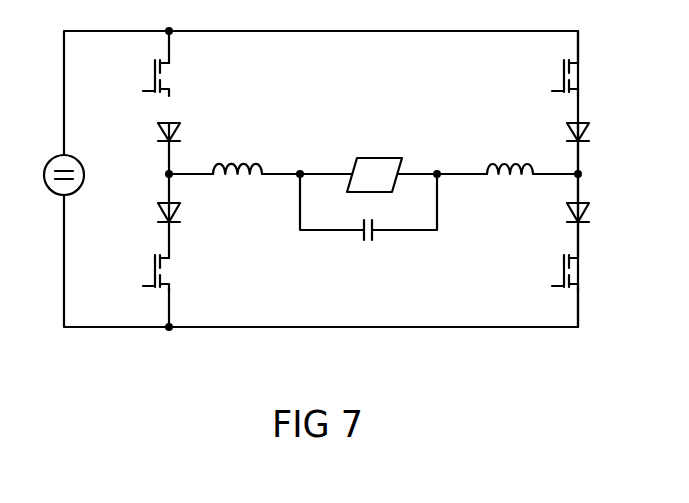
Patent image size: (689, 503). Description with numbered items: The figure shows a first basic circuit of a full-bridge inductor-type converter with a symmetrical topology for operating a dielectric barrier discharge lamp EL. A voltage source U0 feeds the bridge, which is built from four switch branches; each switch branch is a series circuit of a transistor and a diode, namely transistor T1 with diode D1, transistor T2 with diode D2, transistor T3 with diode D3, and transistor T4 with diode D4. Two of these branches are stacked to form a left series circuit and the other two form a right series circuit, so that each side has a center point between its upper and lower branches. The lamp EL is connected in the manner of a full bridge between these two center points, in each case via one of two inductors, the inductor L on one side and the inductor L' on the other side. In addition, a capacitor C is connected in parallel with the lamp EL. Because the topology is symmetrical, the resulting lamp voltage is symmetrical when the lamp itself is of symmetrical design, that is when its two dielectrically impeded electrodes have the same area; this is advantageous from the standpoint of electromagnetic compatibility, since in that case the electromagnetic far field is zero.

The DC voltage source U0 is at (50, 155).
The transistor T1 is at (177, 78).
The transistor T2 is at (175, 273).
The transistor T3 is at (585, 78).
The transistor T4 is at (585, 273).
The diode D1 is at (150, 134).
The diode D2 is at (150, 214).
The diode D3 is at (600, 136).
The diode D4 is at (599, 214).
The inductor L is at (237, 154).
The inductor L' is at (510, 153).
The dielectric barrier discharge lamp EL is at (374, 162).
The capacitor C is at (368, 222).